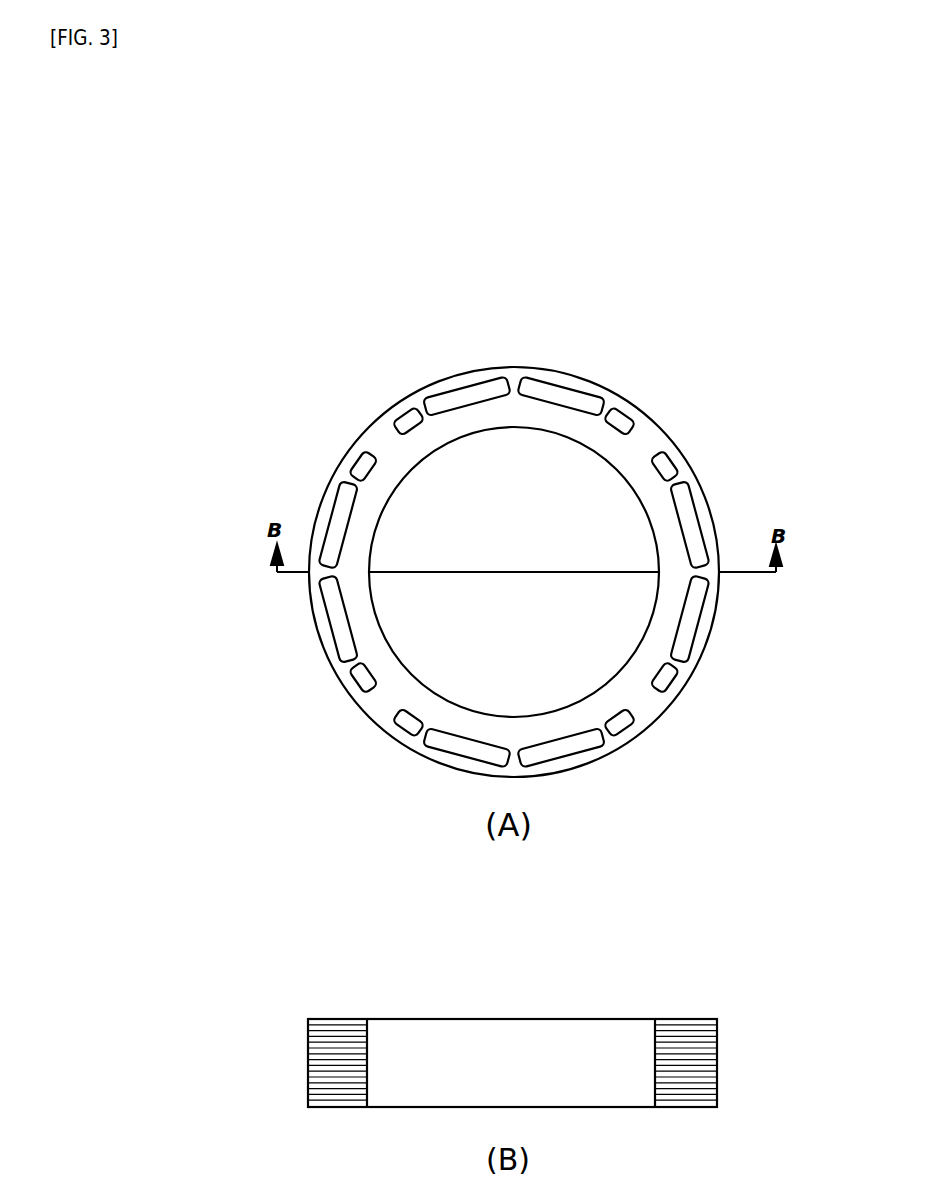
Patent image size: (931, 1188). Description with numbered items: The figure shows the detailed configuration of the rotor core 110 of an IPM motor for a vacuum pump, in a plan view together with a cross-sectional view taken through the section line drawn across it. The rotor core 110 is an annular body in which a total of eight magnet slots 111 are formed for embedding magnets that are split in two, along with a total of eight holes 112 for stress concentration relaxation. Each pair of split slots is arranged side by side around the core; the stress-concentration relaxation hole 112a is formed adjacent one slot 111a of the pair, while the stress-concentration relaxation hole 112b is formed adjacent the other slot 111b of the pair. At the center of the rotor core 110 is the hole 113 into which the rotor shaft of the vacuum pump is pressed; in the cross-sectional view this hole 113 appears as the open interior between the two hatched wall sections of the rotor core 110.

The rotor core 110 is at (662, 427).
The magnet slot 111 is at (704, 498).
The magnet slot 111a is at (463, 386).
The magnet slot 111b is at (565, 386).
The stress-concentration relaxation hole 112 is at (679, 456).
The stress-concentration relaxation hole 112a is at (403, 408).
The stress-concentration relaxation hole 112b is at (613, 423).
The hole for pressing in the rotor shaft 113 is at (392, 648).